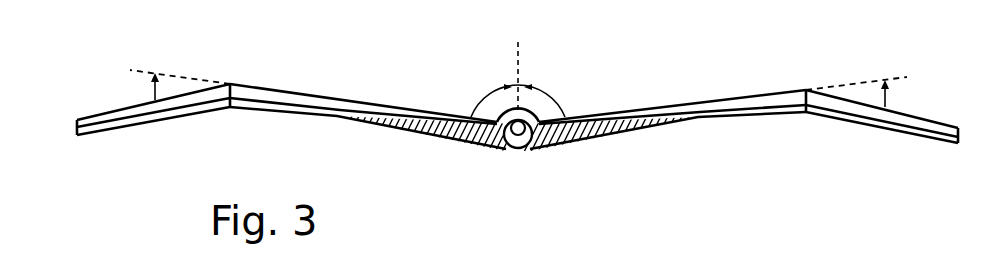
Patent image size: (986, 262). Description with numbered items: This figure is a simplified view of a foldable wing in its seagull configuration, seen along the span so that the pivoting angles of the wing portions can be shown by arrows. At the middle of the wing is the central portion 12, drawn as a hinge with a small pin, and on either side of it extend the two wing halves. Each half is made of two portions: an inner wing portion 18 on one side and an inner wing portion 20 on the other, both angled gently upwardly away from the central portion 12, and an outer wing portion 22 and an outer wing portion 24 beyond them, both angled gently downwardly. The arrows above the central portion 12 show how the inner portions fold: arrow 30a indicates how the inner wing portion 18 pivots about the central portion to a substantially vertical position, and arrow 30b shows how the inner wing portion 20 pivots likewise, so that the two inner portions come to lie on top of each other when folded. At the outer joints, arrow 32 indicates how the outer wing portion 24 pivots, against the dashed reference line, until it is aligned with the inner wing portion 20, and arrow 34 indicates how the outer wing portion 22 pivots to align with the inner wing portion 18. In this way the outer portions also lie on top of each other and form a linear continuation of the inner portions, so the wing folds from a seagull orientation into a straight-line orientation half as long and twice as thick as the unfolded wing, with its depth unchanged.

The central portion 12 is at (528, 156).
The inner wing portion 18 is at (757, 118).
The inner wing portion 20 is at (315, 120).
The outer wing portion 22 is at (888, 128).
The outer wing portion 24 is at (172, 118).
The arrow 30a is at (538, 87).
The arrow 30b is at (492, 88).
The arrow 32 is at (142, 92).
The arrow 34 is at (902, 93).